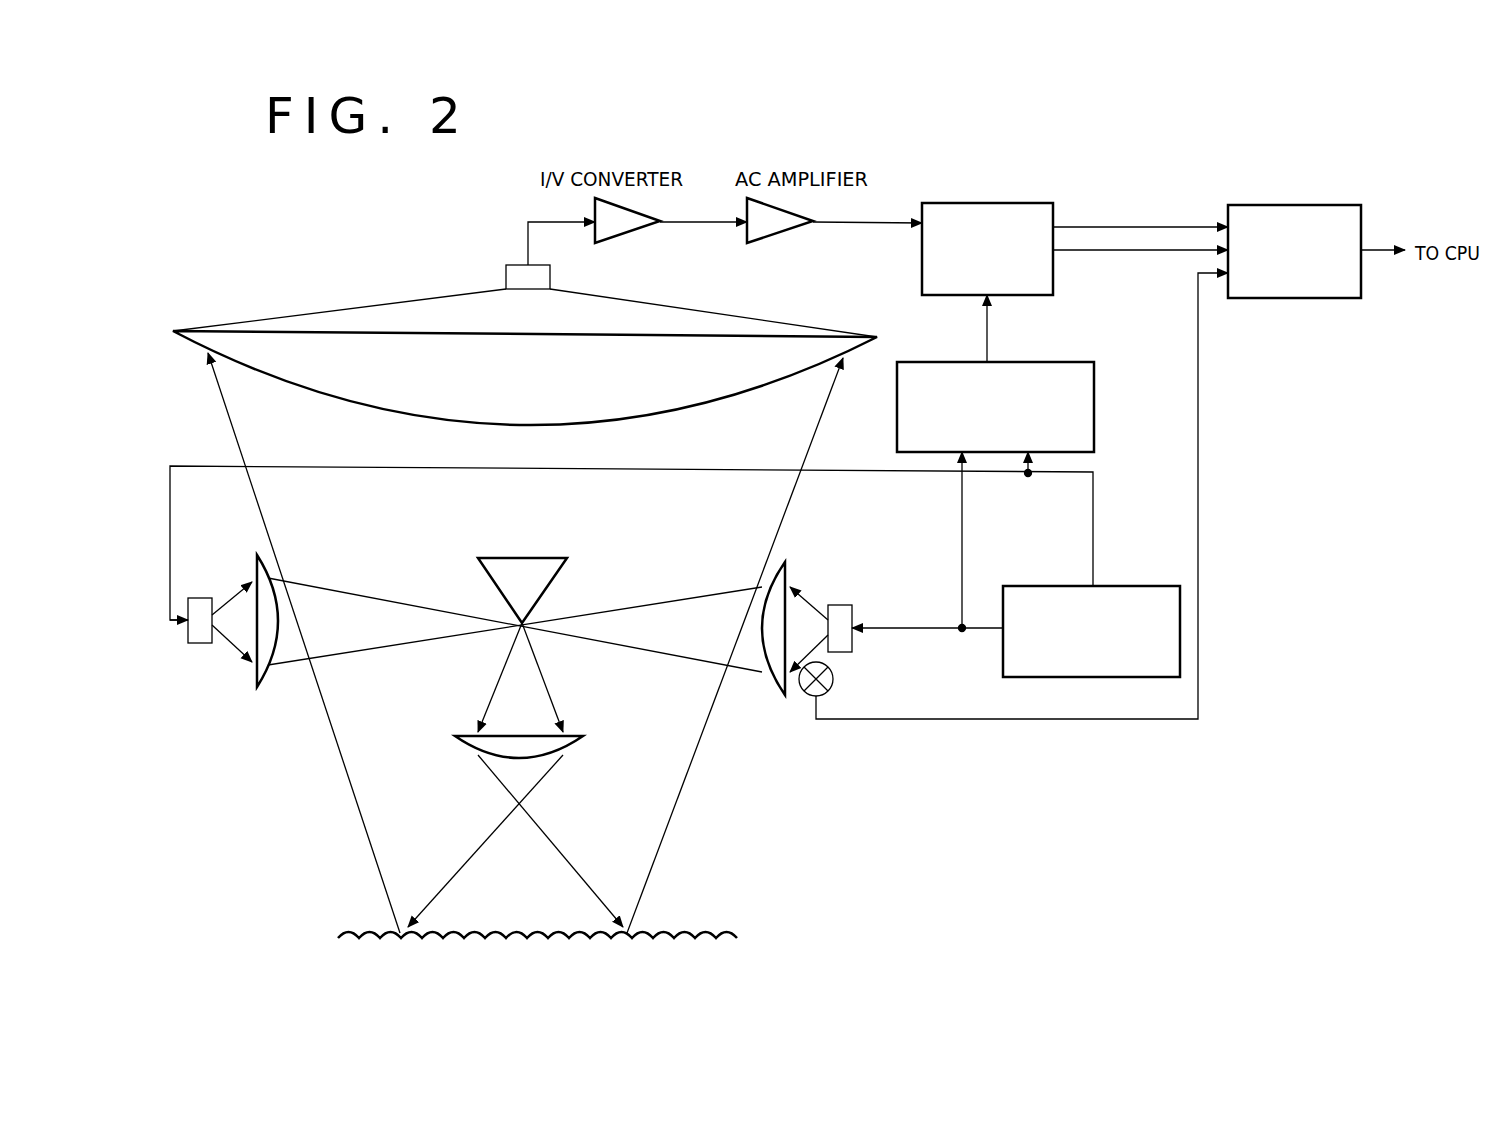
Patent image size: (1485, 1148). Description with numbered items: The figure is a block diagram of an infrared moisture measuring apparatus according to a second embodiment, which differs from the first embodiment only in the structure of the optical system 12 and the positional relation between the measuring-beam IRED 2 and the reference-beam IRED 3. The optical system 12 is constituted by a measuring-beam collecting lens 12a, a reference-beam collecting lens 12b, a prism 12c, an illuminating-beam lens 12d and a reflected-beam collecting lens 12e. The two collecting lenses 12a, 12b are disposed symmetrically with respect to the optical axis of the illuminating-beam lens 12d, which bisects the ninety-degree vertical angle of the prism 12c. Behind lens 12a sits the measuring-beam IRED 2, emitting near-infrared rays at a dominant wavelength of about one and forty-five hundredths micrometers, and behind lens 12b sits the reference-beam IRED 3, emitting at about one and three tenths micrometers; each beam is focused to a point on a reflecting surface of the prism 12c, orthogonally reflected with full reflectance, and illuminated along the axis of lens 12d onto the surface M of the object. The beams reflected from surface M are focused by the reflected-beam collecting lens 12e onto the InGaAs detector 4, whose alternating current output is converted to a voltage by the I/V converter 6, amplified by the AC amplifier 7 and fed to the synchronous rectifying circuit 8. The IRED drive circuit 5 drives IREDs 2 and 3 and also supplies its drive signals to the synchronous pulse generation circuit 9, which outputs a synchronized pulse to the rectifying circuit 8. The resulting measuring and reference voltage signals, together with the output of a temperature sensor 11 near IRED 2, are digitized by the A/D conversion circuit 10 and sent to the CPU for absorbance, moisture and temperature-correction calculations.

The measuring-beam IRED 2 is at (833, 604).
The reference-beam IRED 3 is at (202, 598).
The InGaAs detector 4 is at (506, 272).
The IRED drive circuit 5 is at (1113, 586).
The I/V converter 6 is at (617, 232).
The AC amplifier 7 is at (777, 237).
The synchronous rectifying circuit 8 is at (960, 203).
The synchronous pulse generation circuit 9 is at (1025, 362).
The A/D conversion circuit 10 is at (1268, 205).
The temperature sensor 11 is at (835, 670).
The optical system 12 is at (330, 747).
The measuring-beam collecting lens 12a is at (760, 645).
The reference-beam collecting lens 12b is at (262, 678).
The prism 12c is at (527, 555).
The illuminating-beam lens 12d is at (508, 758).
The reflected-beam collecting lens 12e is at (417, 415).
The surface of object to be measured M is at (683, 932).